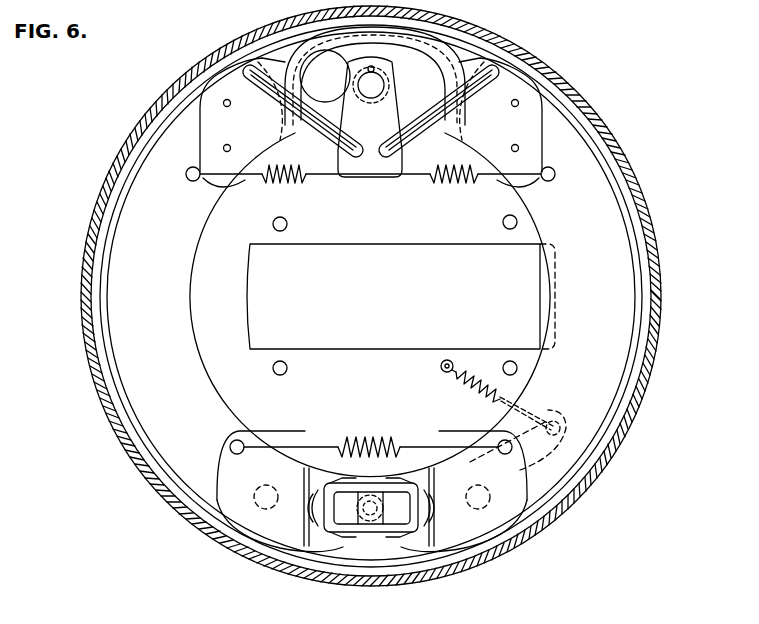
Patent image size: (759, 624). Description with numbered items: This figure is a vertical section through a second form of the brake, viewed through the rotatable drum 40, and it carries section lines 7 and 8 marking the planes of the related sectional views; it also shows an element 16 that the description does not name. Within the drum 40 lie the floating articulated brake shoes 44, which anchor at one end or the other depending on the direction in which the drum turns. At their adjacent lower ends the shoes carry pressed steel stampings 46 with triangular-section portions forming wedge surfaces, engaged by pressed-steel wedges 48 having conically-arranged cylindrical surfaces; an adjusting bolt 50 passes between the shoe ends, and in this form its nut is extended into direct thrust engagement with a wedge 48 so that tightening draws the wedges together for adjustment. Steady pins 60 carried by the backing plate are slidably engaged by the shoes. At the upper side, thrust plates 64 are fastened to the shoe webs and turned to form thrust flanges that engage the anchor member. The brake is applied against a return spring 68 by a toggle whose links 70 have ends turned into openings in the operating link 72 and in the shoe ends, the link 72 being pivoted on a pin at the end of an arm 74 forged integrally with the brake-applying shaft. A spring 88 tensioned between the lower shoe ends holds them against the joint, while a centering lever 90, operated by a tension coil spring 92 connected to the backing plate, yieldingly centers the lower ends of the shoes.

The section line 7- 7 is at (170, 70).
The section line 8- 8 is at (136, 477).
The anchor bracket 16 is at (422, 40).
The rotatable drum 40 is at (661, 296).
The floating articulated brake shoes 44 is at (372, 305).
The pressed steel stampings 46 is at (263, 463).
The pressed-steel wedges 48 is at (415, 500).
The adjusting bolt 50 is at (372, 522).
The steady pins 60 is at (258, 490).
The thrust plates 64 is at (371, 122).
The return spring 68 is at (270, 185).
The toggle links 70 is at (318, 140).
The operating link 72 is at (370, 117).
The arm 74 is at (325, 76).
The spring 88 is at (362, 440).
The centering lever 90 is at (558, 424).
The tension coil spring 92 is at (512, 392).